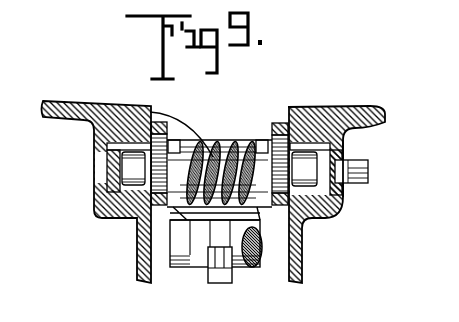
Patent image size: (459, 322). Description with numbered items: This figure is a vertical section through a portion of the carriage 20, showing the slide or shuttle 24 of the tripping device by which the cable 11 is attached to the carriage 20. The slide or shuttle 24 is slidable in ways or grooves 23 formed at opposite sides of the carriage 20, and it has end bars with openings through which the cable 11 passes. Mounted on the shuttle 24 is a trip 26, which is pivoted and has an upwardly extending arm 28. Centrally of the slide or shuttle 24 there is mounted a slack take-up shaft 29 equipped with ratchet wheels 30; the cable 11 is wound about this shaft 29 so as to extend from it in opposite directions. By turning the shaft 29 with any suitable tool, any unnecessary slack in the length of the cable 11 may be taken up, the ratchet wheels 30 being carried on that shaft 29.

The cable 11 is at (237, 140).
The carriage 20 is at (151, 112).
The ways or grooves 23 is at (318, 157).
The slide or shuttle 24 is at (344, 198).
The trip 26 is at (213, 273).
The upwardly extending arm 28 is at (210, 211).
The slack take-up shaft 29 is at (355, 163).
The ratchet wheels 30 is at (166, 142).